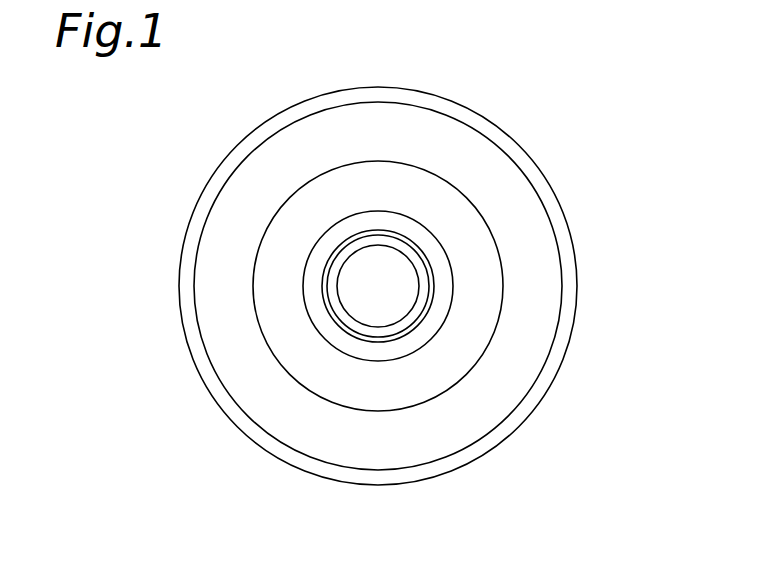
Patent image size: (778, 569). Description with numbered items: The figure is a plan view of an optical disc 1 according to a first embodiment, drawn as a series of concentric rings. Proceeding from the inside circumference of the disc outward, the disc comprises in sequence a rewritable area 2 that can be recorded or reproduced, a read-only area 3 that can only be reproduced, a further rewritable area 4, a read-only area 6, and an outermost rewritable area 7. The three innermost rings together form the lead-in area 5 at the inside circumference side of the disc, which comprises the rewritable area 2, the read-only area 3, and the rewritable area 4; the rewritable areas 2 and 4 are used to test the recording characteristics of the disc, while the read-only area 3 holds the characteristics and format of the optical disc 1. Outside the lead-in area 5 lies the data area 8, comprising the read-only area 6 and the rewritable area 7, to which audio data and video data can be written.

The optical disc 1 is at (469, 92).
The rewritable area 2 is at (392, 333).
The read-only area 3 is at (413, 322).
The rewritable area 4 is at (450, 312).
The lead-in area 5 is at (630, 382).
The read-only area 6 is at (472, 247).
The rewritable area 7 is at (502, 177).
The data area 8 is at (613, 105).